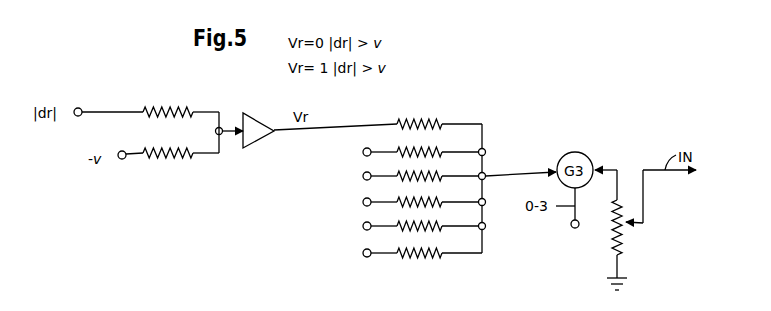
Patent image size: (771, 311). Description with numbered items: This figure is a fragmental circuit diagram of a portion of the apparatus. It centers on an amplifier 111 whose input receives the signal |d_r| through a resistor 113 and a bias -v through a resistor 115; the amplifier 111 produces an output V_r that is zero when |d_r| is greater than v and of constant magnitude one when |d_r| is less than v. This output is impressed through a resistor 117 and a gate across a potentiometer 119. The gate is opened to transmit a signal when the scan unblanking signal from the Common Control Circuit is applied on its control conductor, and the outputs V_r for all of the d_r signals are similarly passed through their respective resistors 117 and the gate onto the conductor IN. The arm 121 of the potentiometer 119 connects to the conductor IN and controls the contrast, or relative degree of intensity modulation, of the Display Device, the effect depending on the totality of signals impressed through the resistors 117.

The amplifier 111 is at (250, 124).
The resistor 113 is at (169, 110).
The resistor 115 is at (167, 158).
The resistor 117 is at (433, 122).
The potentiometer 119 is at (623, 247).
The arm 121 is at (647, 226).